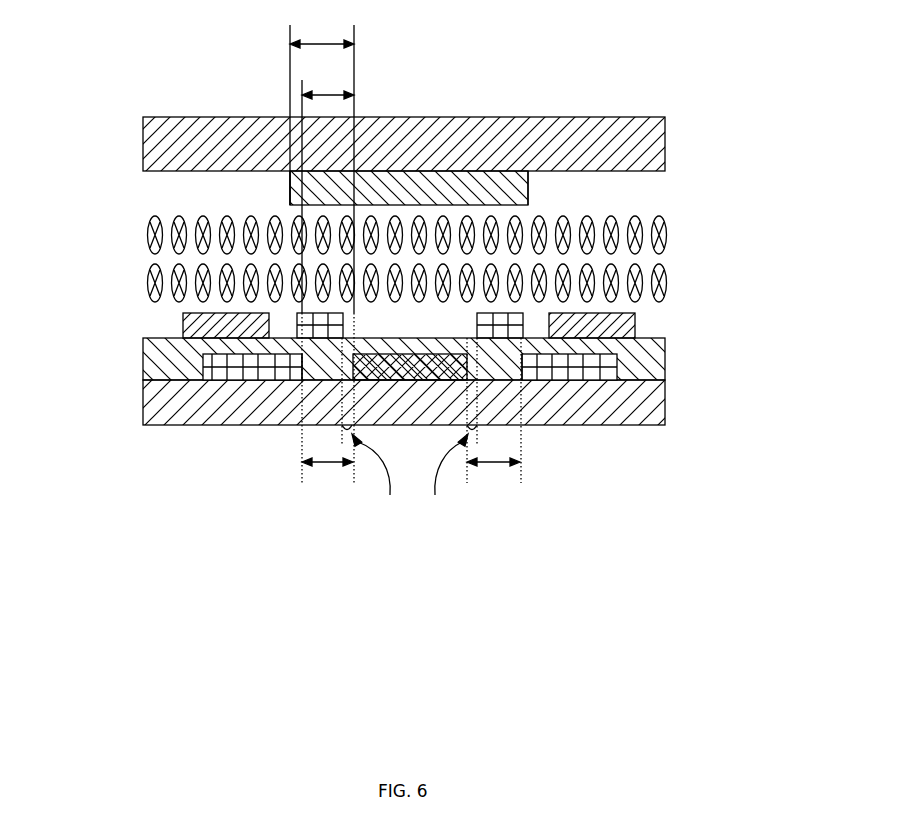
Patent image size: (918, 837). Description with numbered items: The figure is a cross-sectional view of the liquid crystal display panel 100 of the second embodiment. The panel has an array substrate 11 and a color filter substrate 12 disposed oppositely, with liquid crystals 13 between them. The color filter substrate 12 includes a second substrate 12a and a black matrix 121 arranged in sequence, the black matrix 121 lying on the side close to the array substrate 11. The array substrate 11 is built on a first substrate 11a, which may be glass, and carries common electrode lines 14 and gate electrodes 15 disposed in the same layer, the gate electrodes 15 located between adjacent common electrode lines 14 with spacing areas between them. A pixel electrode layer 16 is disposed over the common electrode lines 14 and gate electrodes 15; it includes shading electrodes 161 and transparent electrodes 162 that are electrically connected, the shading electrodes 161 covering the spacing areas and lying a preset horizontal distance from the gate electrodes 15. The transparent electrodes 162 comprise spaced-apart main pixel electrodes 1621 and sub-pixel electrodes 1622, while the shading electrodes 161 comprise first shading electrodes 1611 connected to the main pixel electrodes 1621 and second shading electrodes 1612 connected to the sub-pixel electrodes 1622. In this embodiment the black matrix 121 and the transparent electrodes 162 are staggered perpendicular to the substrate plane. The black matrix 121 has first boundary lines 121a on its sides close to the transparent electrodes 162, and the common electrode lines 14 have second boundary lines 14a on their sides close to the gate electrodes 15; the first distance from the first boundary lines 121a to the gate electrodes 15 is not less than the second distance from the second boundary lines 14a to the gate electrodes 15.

The liquid crystal display panel 100 is at (171, 70).
The array substrate 11 is at (260, 593).
The first substrate 11a is at (700, 408).
The color filter substrate 12 is at (405, 48).
The second substrate 12a is at (713, 150).
The black matrix 121 is at (480, 195).
The first boundary lines 121a is at (279, 182).
The liquid crystals 13 is at (645, 243).
The common electrode lines 14 is at (217, 367).
The second boundary lines 14a is at (293, 375).
The gate electrodes 15 is at (405, 380).
The pixel electrode layer 16 is at (408, 613).
The shading electrodes 161 is at (463, 592).
The first shading electrodes 1611 is at (300, 318).
The second shading electrodes 1612 is at (500, 322).
The transparent electrodes 162 is at (463, 655).
The main pixel electrodes 1621 is at (197, 318).
The sub-pixel electrodes 1622 is at (607, 330).